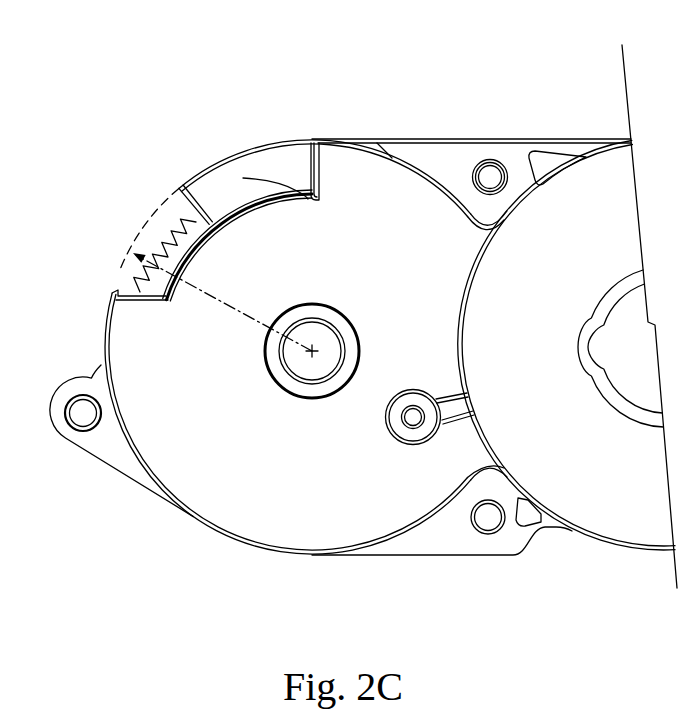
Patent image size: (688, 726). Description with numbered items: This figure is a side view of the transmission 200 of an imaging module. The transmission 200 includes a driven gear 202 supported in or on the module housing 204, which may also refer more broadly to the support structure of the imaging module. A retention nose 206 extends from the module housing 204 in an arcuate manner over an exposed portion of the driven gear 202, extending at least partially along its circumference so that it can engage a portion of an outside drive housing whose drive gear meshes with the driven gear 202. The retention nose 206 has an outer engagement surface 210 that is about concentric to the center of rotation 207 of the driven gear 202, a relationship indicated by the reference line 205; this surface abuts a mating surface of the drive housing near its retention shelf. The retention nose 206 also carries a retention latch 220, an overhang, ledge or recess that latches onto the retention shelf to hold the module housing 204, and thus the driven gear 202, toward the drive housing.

The transmission 200 is at (103, 62).
The driven gear 202 is at (196, 236).
The module housing 204 is at (153, 527).
The reference line 205 is at (143, 232).
The retention nose 206 is at (316, 199).
The center of rotation 207 is at (312, 356).
The outer engagement surface 210 is at (253, 137).
The retention latch 220 is at (213, 226).